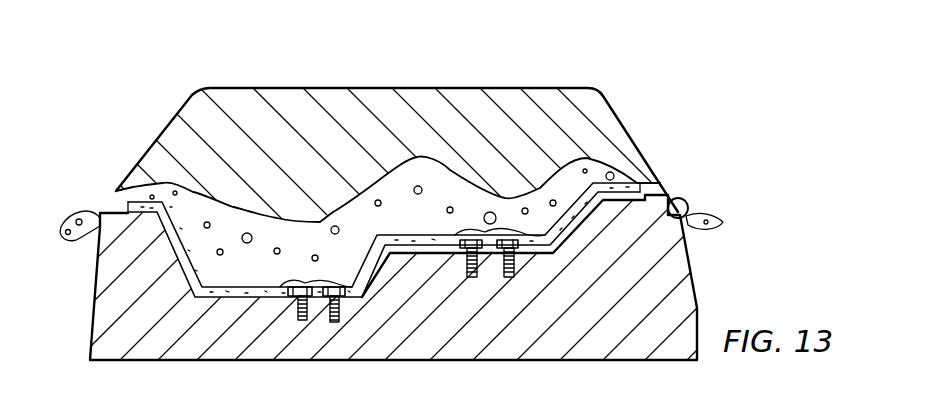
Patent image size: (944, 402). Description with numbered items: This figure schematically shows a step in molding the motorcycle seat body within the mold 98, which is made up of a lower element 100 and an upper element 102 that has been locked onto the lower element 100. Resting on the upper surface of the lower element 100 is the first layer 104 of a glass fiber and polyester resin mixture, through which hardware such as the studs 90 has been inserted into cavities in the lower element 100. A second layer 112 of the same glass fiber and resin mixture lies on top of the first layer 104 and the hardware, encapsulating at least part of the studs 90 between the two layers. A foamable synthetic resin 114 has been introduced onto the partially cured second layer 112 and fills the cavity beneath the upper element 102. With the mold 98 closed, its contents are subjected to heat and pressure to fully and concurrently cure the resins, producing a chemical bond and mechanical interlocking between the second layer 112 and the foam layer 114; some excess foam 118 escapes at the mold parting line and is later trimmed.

The mold 98 is at (433, 219).
The lower element 100 is at (114, 330).
The upper element 102 is at (543, 97).
The first layer 104 is at (646, 197).
The second layer 112 is at (146, 200).
The foamable synthetic resin 114 is at (597, 172).
The excess foam 118 is at (91, 205).
The studs 90 is at (336, 322).